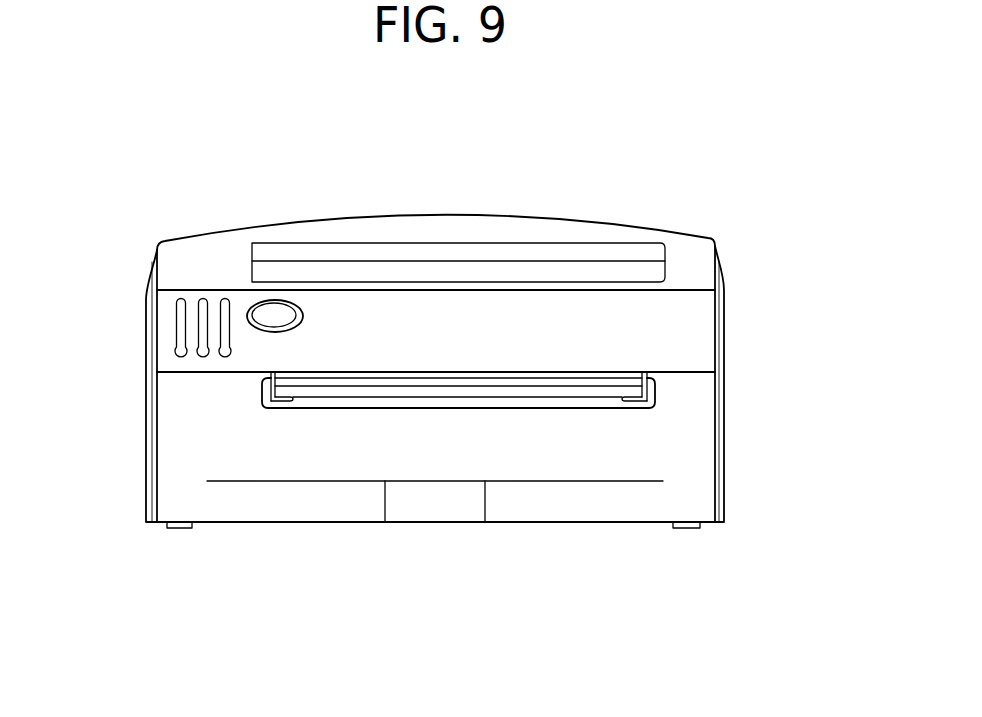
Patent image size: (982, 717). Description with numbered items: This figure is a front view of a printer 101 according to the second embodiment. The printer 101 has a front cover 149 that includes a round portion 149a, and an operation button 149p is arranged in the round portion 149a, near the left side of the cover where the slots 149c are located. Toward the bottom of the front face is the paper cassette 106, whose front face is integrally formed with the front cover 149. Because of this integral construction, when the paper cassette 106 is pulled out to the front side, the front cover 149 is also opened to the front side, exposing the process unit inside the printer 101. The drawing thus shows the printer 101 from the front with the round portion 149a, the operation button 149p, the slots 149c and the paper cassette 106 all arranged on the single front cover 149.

The printer 101 is at (314, 180).
The front cover 149 is at (690, 396).
The round portion 149a is at (696, 322).
The vent slots 149c is at (181, 321).
The operation button 149p is at (262, 310).
The paper cassette 106 is at (463, 508).